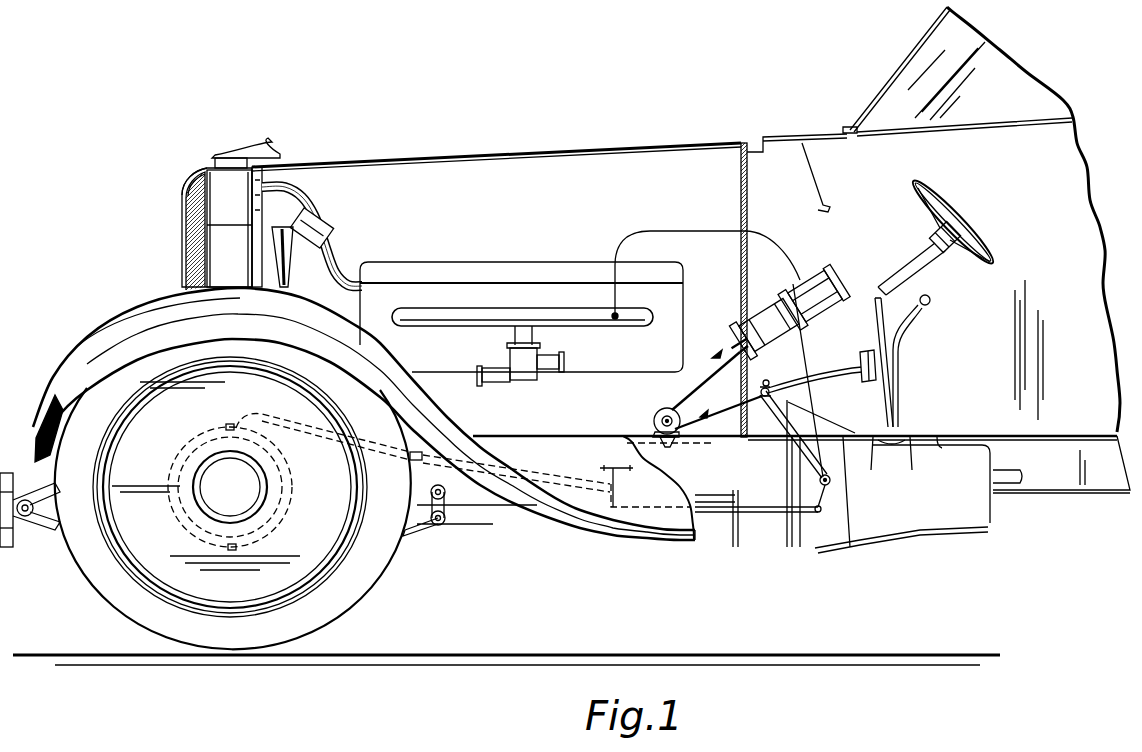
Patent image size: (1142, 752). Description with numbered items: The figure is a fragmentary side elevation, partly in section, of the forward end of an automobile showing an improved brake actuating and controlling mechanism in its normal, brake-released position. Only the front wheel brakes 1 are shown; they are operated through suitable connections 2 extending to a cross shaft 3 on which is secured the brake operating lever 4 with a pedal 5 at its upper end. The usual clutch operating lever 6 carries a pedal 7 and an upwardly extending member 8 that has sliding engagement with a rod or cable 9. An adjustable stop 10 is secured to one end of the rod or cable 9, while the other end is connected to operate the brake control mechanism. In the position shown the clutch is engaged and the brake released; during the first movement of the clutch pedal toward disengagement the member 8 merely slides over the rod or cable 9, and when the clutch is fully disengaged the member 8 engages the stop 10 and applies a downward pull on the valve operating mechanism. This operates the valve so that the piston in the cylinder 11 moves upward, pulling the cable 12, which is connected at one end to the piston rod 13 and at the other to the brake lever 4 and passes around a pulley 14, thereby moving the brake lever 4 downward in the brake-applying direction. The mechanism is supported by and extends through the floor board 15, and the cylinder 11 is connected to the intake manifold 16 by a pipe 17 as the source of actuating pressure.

The front wheel brakes 1 is at (268, 492).
The connections 2 is at (505, 458).
The cross shaft 3 is at (831, 484).
The brake operating lever 4 is at (777, 407).
The pedal 5 is at (866, 368).
The clutch operating lever 6 is at (777, 404).
The pedal 7 is at (898, 400).
The upwardly extending member 8 is at (768, 358).
The rod or cable 9 is at (806, 362).
The adjustable stop 10 is at (748, 393).
The cylinder 11 is at (750, 318).
The cable 12 is at (686, 397).
The piston rod 13 is at (705, 380).
The pulley 14 is at (673, 432).
The floor board 15 is at (838, 398).
The intake manifold 16 is at (540, 308).
The pipe 17 is at (672, 232).